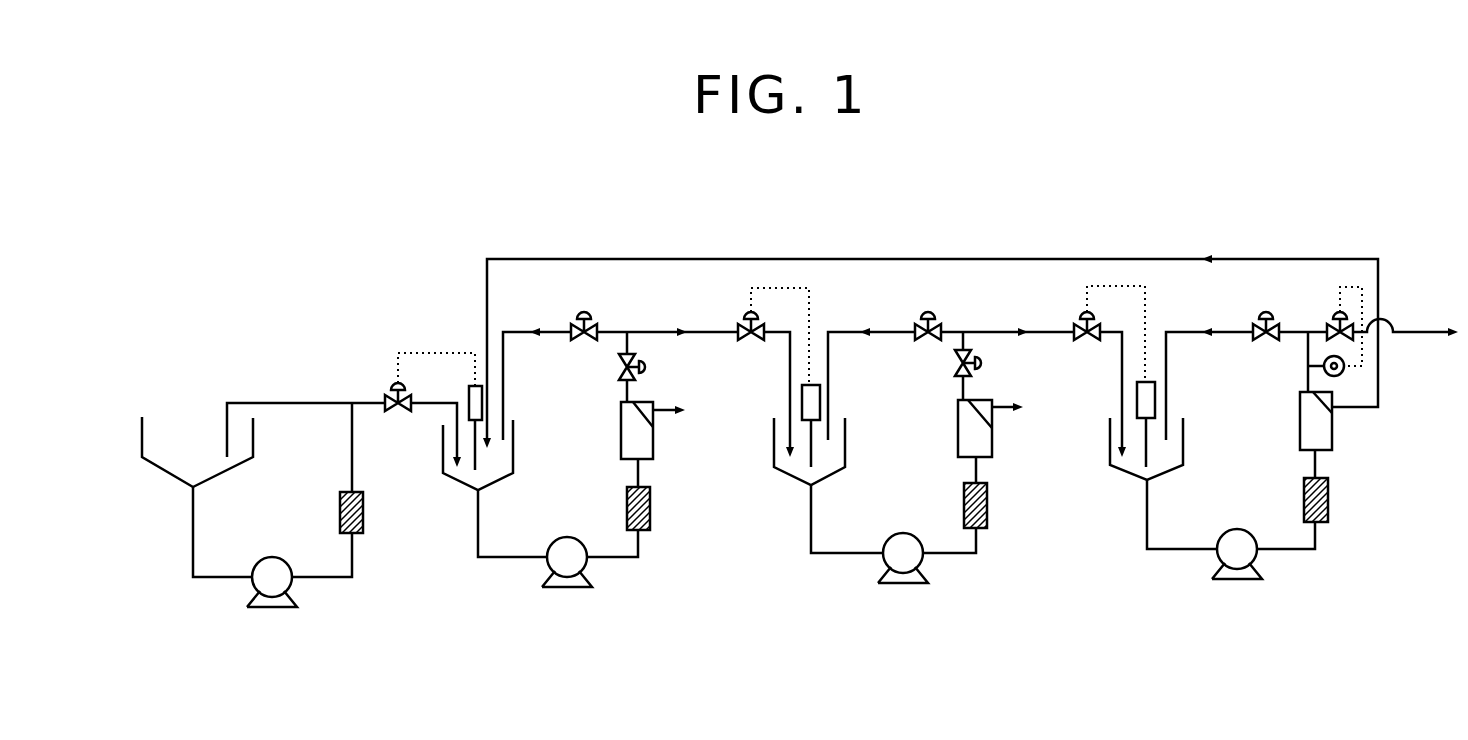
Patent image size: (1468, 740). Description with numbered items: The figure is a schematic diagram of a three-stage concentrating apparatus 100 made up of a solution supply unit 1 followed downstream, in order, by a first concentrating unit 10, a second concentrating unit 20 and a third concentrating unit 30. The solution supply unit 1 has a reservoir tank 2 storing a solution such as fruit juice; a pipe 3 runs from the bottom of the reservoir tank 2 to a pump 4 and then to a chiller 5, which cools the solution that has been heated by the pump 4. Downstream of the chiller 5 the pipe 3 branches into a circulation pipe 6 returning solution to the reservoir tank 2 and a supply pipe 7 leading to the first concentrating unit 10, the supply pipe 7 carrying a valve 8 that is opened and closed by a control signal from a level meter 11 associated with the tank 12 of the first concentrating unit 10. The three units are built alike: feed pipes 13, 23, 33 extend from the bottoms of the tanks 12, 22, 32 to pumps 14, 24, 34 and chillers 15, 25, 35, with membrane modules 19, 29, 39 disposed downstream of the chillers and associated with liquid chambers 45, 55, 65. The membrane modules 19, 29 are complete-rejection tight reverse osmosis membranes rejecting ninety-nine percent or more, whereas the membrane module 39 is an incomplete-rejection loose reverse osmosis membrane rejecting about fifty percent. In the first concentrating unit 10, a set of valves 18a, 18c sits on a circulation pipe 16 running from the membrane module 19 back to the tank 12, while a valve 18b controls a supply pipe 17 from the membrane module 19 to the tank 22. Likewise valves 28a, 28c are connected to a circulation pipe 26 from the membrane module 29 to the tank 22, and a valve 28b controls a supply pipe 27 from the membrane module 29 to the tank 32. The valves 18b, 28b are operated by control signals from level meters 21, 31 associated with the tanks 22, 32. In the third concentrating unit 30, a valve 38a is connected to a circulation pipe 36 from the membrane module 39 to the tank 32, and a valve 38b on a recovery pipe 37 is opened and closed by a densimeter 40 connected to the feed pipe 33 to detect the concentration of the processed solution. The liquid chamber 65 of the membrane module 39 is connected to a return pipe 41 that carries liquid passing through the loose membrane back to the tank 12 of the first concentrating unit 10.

The concentrating apparatus 100 is at (246, 276).
The solution supply unit 1 is at (280, 628).
The reservoir tank 2 is at (142, 435).
The pipe 3 is at (193, 547).
The pump 4 is at (272, 567).
The chiller 5 is at (363, 520).
The circulation pipe 6 is at (255, 400).
The supply pipe 7 is at (435, 400).
The valve 8 is at (392, 385).
The first concentrating unit 10 is at (587, 594).
The level meter 11 is at (475, 385).
The tank 12 is at (460, 490).
The feed pipe 13 is at (508, 560).
The pump 14 is at (565, 550).
The chiller 15 is at (648, 515).
The circulation pipe 16 is at (523, 330).
The supply pipe 17 is at (660, 330).
The valve 18a is at (588, 315).
The valve 18b is at (745, 315).
The valve 18c is at (650, 367).
The membrane module 19 is at (628, 438).
The liquid chamber 45 is at (655, 418).
The second concentrating unit 20 is at (956, 566).
The level meter 21 is at (812, 405).
The tank 22 is at (792, 480).
The feed pipe 23 is at (833, 555).
The pump 24 is at (903, 540).
The chiller 25 is at (987, 515).
The circulation pipe 26 is at (852, 332).
The supply pipe 27 is at (1033, 330).
The valve 28a is at (928, 318).
The valve 28b is at (1073, 318).
The valve 28c is at (990, 363).
The membrane module 29 is at (965, 432).
The liquid chamber 55 is at (995, 415).
The third concentrating unit 30 is at (1276, 568).
The level meter 31 is at (1150, 400).
The tank 32 is at (1120, 472).
The feed pipe 33 is at (1165, 552).
The pump 34 is at (1235, 540).
The chiller 35 is at (1330, 508).
The circulation pipe 36 is at (1175, 330).
The recovery pipe 37 is at (1418, 332).
The valve 38a is at (1265, 315).
The valve 38b is at (1340, 315).
The membrane module 39 is at (1305, 432).
The liquid chamber 65 is at (1335, 415).
The densimeter 40 is at (1342, 372).
The return pipe 41 is at (848, 257).